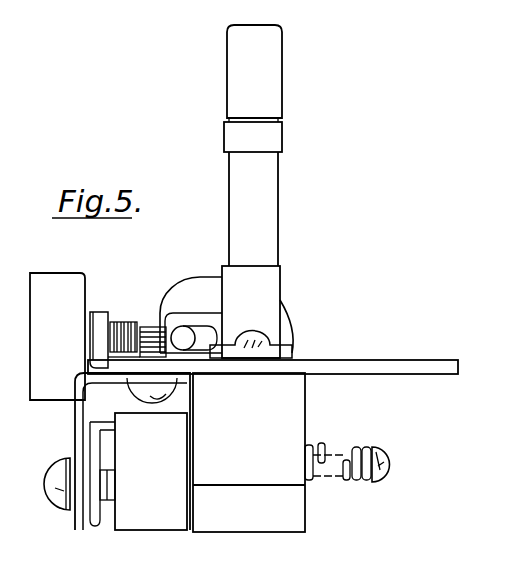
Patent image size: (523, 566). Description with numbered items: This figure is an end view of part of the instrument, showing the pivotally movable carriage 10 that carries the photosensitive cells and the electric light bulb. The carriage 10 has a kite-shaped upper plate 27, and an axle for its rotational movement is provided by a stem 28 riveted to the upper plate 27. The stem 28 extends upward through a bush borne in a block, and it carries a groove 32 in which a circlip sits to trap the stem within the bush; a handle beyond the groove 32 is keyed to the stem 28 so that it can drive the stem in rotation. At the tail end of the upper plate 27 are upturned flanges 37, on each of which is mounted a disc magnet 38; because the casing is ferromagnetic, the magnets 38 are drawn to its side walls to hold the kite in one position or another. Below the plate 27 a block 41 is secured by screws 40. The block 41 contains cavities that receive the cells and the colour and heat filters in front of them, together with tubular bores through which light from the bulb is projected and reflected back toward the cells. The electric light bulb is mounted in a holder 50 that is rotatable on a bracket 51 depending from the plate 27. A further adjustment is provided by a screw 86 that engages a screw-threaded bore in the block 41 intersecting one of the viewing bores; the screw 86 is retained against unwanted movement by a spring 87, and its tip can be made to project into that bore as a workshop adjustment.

The carriage 10 is at (320, 333).
The upper plate 27 is at (423, 358).
The stem 28 is at (278, 163).
The groove 32 is at (281, 118).
The upturned flanges 37 is at (162, 326).
The disc magnet 38 is at (55, 293).
The screws 40 is at (262, 347).
The block 41 is at (288, 434).
The holder 50 is at (162, 478).
The bracket 51 is at (122, 382).
The screw 86 is at (333, 460).
The spring 87 is at (369, 446).